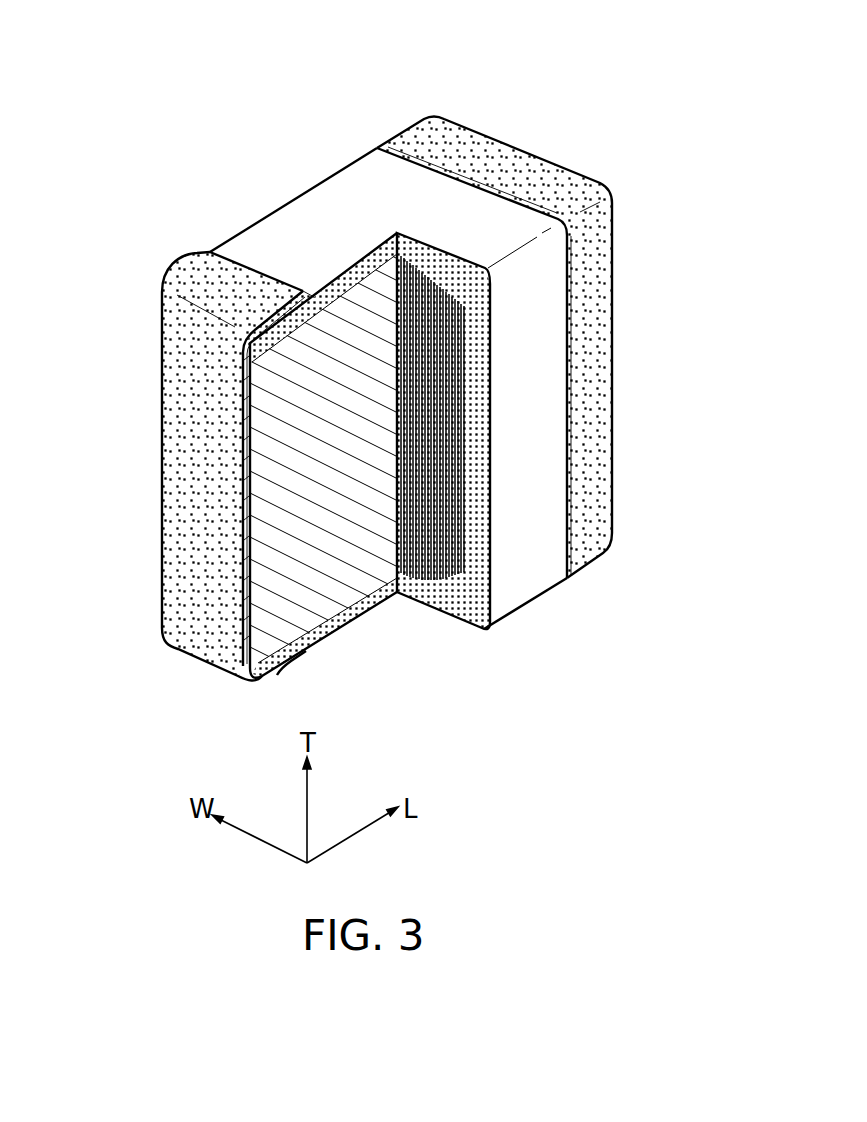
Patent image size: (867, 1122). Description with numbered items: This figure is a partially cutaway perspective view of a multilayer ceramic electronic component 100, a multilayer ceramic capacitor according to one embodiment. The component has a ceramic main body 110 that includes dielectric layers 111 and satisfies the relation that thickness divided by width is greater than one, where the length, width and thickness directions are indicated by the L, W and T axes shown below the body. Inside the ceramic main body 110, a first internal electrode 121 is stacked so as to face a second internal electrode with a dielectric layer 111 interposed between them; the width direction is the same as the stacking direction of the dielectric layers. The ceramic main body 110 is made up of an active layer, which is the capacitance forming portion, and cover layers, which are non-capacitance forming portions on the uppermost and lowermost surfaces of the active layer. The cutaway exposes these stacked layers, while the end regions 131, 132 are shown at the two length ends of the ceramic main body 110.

The multilayer ceramic electronic component 100 is at (407, 49).
The ceramic main body 110 is at (302, 174).
The dielectric layer 111 is at (478, 446).
The first internal electrode 121 is at (272, 494).
The first external electrode 131 is at (205, 277).
The second external electrode 132 is at (518, 168).